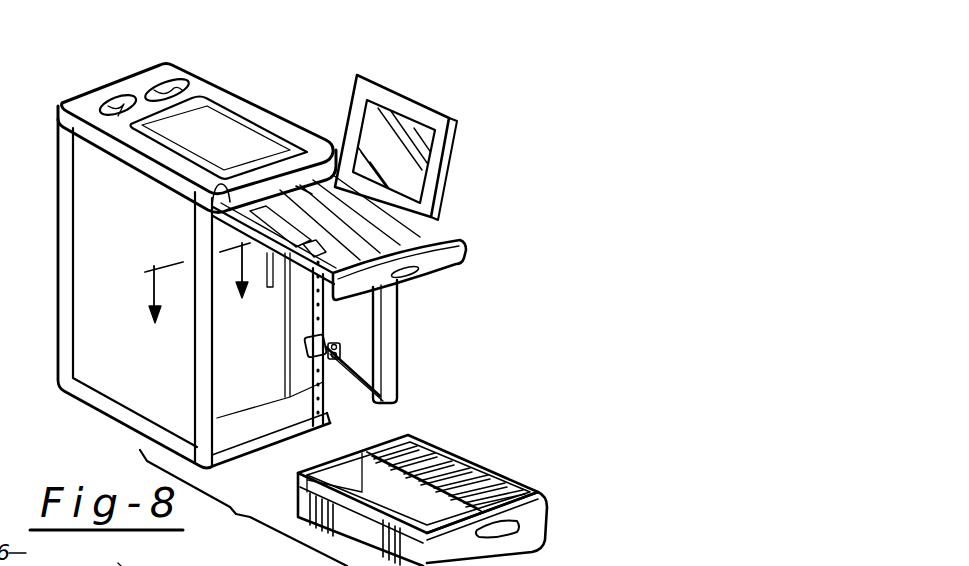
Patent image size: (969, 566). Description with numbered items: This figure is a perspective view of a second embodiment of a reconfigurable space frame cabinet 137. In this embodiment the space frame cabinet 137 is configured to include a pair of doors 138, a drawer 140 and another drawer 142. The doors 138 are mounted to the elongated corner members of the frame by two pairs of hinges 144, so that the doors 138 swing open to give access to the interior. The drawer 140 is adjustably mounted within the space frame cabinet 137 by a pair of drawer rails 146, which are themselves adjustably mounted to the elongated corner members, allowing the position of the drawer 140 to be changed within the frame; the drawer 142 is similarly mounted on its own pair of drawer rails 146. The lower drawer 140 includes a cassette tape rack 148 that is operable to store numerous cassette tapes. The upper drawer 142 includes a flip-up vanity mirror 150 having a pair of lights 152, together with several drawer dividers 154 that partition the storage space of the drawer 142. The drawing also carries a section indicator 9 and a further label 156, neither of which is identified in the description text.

The reconfigurable space frame cabinet 137 is at (228, 70).
The drawer dividers 154 is at (300, 190).
The flip-up vanity mirror 150 is at (398, 118).
The lights 152 is at (433, 169).
The drawer 142 is at (460, 247).
The doors 138 is at (360, 310).
The hinges 144 is at (335, 338).
The drawer rails 146 is at (337, 396).
The cassette tape rack 148 is at (450, 455).
The drawer 140 is at (533, 528).
The base 156 is at (119, 564).
The section line 9- 9 is at (197, 301).